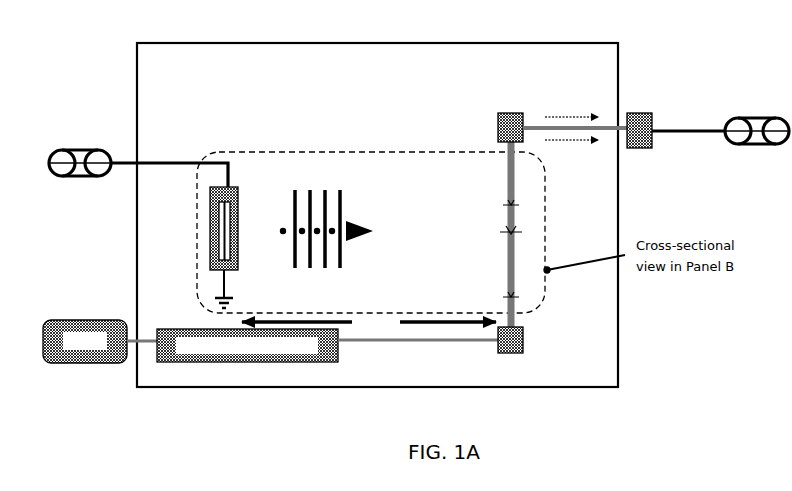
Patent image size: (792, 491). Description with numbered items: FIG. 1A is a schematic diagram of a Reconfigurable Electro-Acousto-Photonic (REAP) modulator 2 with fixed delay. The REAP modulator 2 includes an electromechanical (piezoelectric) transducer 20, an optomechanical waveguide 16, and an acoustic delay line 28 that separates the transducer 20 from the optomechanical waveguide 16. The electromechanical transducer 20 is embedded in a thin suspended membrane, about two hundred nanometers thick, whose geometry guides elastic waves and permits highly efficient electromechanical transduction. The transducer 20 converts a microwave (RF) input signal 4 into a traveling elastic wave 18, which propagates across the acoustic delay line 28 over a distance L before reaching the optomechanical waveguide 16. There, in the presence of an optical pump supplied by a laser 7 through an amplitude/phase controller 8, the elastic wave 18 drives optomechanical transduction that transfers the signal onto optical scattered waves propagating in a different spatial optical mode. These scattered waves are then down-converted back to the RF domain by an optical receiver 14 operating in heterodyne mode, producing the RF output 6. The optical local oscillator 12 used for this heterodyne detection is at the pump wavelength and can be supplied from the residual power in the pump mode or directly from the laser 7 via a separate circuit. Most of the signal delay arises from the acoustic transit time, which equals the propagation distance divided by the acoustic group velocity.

The REAP modulator 2 is at (326, 148).
The microwave (RF) input signal 4 is at (138, 144).
The RF output 6 is at (720, 96).
The laser 7 is at (104, 367).
The amplitude/phase controller 8 is at (300, 367).
The optical local oscillator (LO) 12 is at (500, 112).
The optical receiver 14 is at (643, 149).
The optomechanical waveguide 16 is at (508, 157).
The elastic wave 18 is at (369, 229).
The electromechanical transducer 20 is at (240, 185).
The acoustic delay line 28 is at (369, 330).